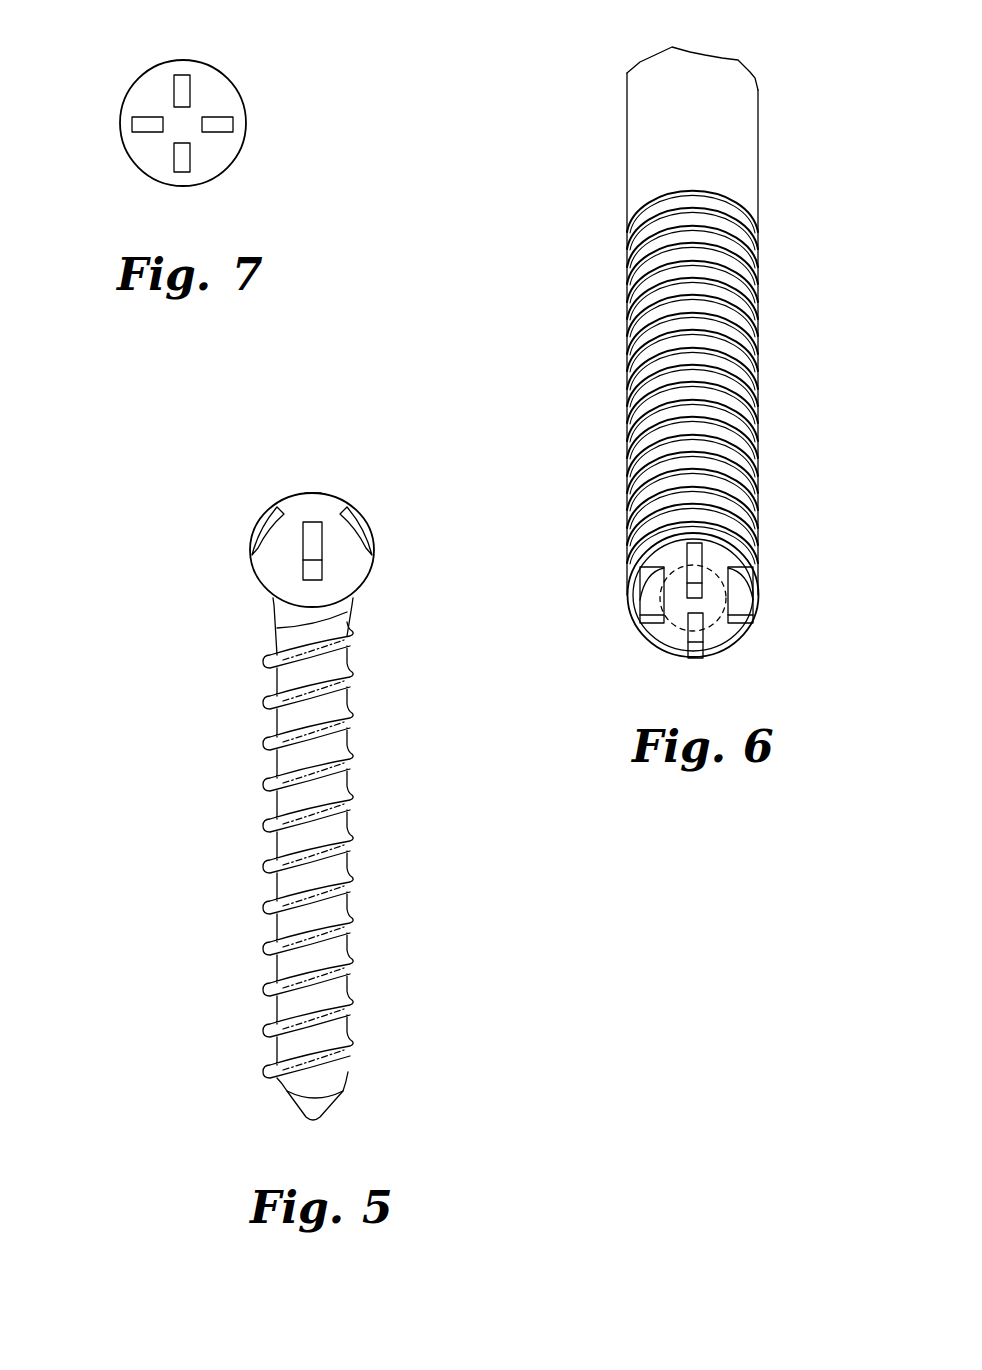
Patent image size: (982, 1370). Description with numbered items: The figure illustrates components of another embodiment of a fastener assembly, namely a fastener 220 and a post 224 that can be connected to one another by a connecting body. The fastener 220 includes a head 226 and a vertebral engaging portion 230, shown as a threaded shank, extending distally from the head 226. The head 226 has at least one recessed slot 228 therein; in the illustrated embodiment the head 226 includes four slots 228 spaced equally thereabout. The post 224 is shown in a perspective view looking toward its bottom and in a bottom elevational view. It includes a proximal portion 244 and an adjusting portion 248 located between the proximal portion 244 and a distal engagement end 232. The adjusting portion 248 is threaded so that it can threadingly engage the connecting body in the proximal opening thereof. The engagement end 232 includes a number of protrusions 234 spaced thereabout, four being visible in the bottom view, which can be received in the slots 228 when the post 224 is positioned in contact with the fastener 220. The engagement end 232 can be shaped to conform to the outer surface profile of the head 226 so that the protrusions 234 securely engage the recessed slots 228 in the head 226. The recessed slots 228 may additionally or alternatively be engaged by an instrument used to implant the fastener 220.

In FIG. 5, the fastener 220 is at (240, 708).
In FIG. 7, the post 224 is at (257, 68).
In FIG. 6, the post 224 is at (583, 303).
In FIG. 5, the head 226 is at (272, 556).
In FIG. 5, the recessed slot 228 is at (312, 493).
In FIG. 5, the vertebral engaging portion 230 is at (370, 770).
In FIG. 7, the distal engagement end 232 is at (147, 80).
In FIG. 6, the distal engagement end 232 is at (723, 640).
In FIG. 7, the protrusion 234 is at (175, 82).
In FIG. 6, the protrusion 234 is at (697, 562).
In FIG. 6, the proximal portion 244 is at (742, 158).
In FIG. 6, the adjusting portion 248 is at (747, 332).